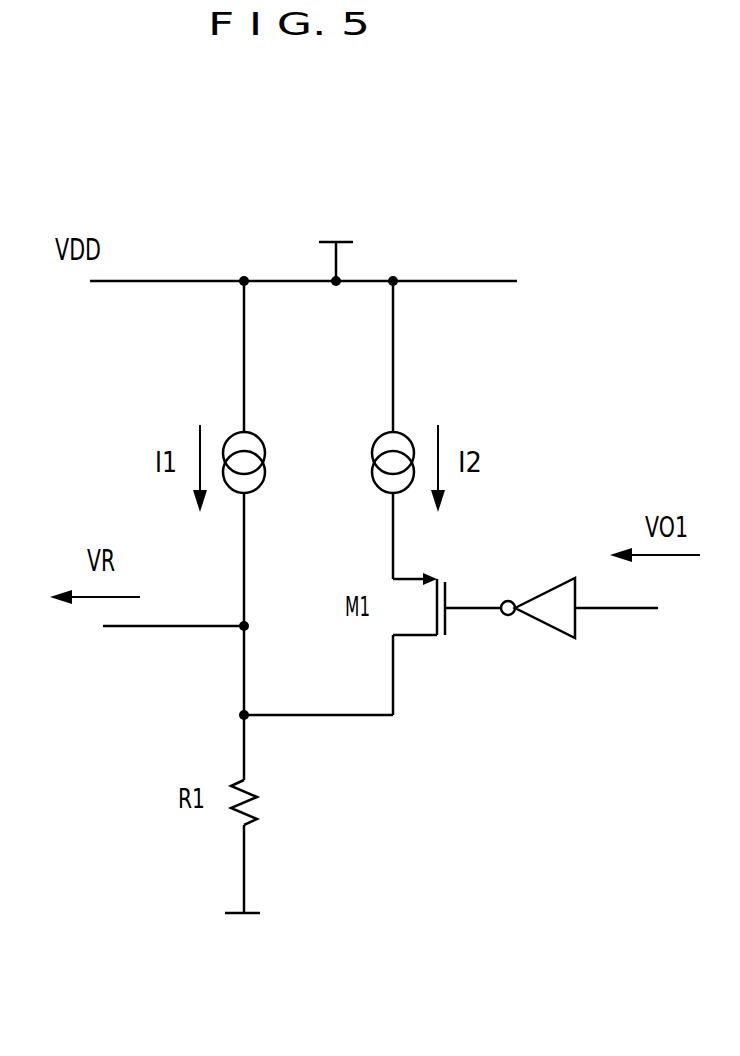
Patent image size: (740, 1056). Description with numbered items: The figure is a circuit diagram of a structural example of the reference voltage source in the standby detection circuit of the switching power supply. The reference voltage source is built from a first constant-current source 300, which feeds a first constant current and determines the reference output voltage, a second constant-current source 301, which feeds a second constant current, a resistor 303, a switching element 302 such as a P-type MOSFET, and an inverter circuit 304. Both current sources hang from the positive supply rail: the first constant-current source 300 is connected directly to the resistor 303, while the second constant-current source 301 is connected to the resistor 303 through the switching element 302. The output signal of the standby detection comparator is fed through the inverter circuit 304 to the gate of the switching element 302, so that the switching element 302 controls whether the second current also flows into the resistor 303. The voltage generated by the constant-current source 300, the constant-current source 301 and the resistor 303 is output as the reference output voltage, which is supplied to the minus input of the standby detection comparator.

The constant-current source 300 is at (255, 433).
The constant-current source 301 is at (380, 425).
The switching element 302 is at (418, 637).
The resistor 303 is at (262, 805).
The inverter circuit 304 is at (553, 627).